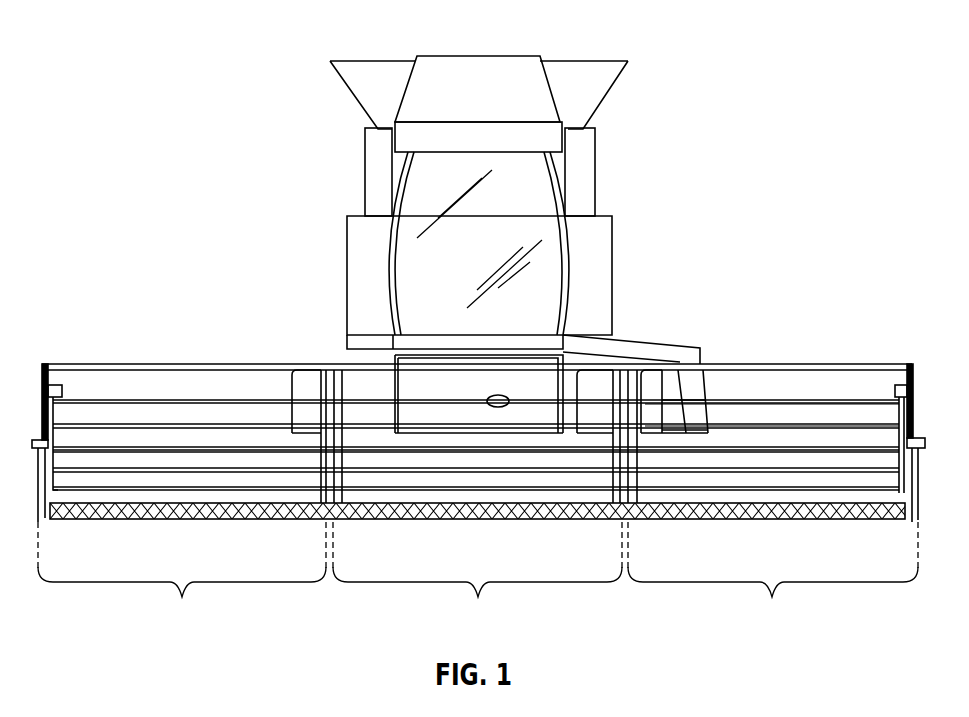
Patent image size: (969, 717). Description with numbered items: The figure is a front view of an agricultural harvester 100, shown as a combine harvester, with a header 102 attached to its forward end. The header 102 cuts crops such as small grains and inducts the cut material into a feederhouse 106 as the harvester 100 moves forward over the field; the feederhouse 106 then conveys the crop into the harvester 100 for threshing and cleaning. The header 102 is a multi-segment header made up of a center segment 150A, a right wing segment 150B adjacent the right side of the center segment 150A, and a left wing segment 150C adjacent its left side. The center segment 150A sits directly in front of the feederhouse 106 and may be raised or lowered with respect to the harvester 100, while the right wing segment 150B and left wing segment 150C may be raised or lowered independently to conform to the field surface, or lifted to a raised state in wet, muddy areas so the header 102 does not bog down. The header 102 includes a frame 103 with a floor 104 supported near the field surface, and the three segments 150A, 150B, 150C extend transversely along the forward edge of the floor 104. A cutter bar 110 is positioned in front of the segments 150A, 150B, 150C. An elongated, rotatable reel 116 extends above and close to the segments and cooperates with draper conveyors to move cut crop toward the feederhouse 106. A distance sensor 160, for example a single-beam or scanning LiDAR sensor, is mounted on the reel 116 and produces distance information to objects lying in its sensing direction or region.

The agricultural harvester 100 is at (247, 200).
The header 102 is at (100, 353).
The frame 103 is at (862, 364).
The floor 104 is at (160, 503).
The feederhouse 106 is at (542, 373).
The cutter bar 110 is at (510, 520).
The reel 116 is at (823, 467).
The distance sensor 160 is at (490, 396).
The center segment 150A is at (477, 577).
The right wing segment 150B is at (182, 577).
The left wing segment 150C is at (773, 577).